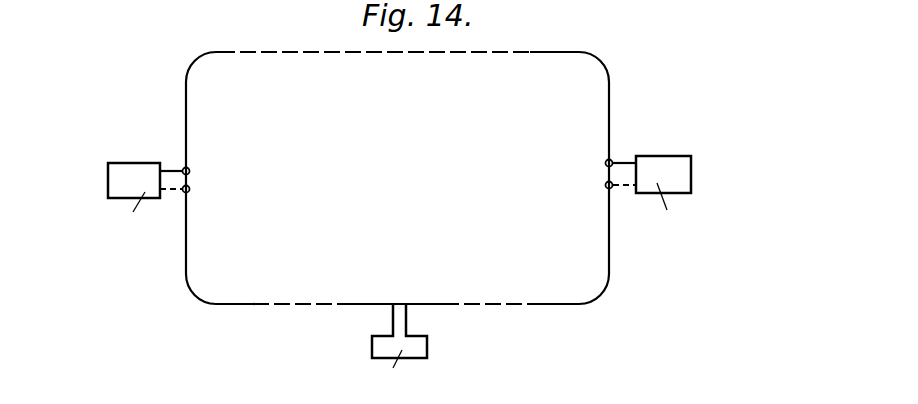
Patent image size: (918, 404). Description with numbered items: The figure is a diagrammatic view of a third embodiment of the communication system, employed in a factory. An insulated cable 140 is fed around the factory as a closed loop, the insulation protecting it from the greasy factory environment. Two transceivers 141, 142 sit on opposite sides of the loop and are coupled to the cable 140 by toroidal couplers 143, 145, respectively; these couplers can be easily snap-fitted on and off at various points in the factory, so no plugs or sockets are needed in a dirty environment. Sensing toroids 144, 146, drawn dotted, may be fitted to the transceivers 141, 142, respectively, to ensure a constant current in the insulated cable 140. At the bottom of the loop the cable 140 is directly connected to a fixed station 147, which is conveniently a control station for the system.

The insulated cable 140 is at (186, 68).
The transceiver 141 is at (128, 172).
The transceiver 142 is at (657, 168).
The toroidal coupler 143 is at (190, 170).
The sensing toroid 144 is at (190, 194).
The toroidal coupler 145 is at (603, 162).
The sensing toroid 146 is at (604, 188).
The fixed station 147 is at (418, 348).